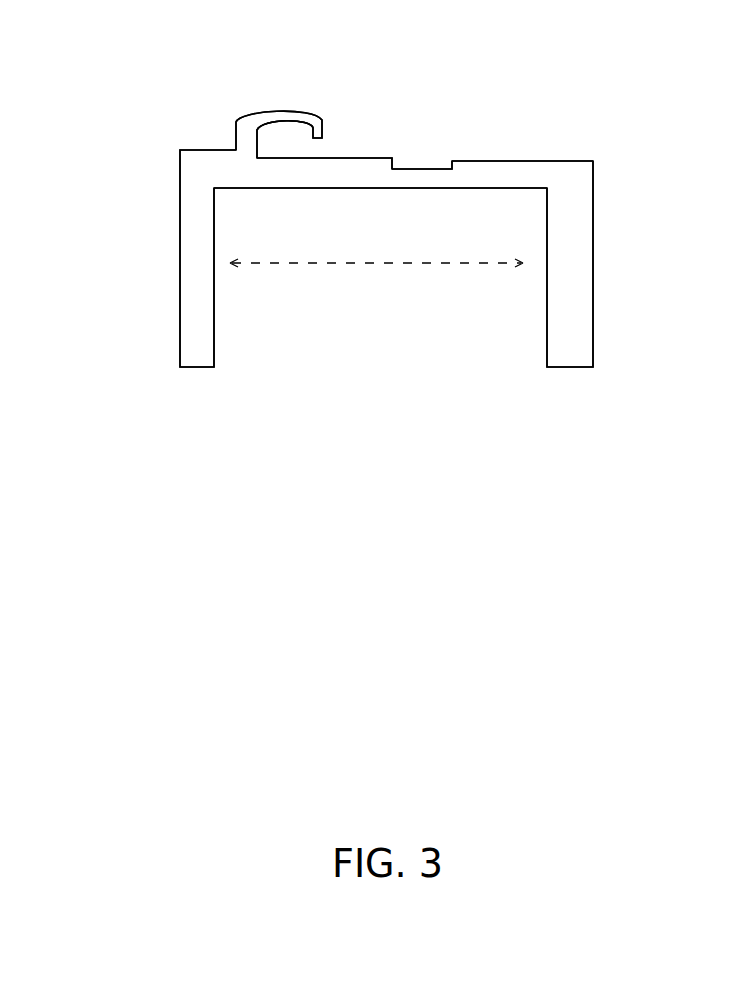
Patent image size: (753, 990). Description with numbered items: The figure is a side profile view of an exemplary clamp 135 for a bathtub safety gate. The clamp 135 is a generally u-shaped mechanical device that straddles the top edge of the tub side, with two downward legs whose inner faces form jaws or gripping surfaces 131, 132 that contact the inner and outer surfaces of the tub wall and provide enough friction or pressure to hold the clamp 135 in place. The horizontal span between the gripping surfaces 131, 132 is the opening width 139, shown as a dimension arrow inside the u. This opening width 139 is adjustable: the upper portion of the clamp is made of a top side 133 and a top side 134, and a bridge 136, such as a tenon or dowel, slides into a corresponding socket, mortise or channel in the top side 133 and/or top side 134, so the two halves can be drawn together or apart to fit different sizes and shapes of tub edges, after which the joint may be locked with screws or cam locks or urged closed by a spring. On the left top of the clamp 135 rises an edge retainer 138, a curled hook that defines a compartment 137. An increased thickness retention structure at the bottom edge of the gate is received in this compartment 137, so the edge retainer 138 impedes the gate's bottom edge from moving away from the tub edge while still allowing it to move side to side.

The gripping surface 131 is at (180, 290).
The gripping surface 132 is at (583, 253).
The top side 133 is at (344, 170).
The top side 134 is at (493, 174).
The clamp 135 is at (163, 181).
The bridge 136 is at (418, 180).
The compartment 137 is at (285, 141).
The edge retainer 138 is at (275, 115).
The opening width 139 is at (376, 253).